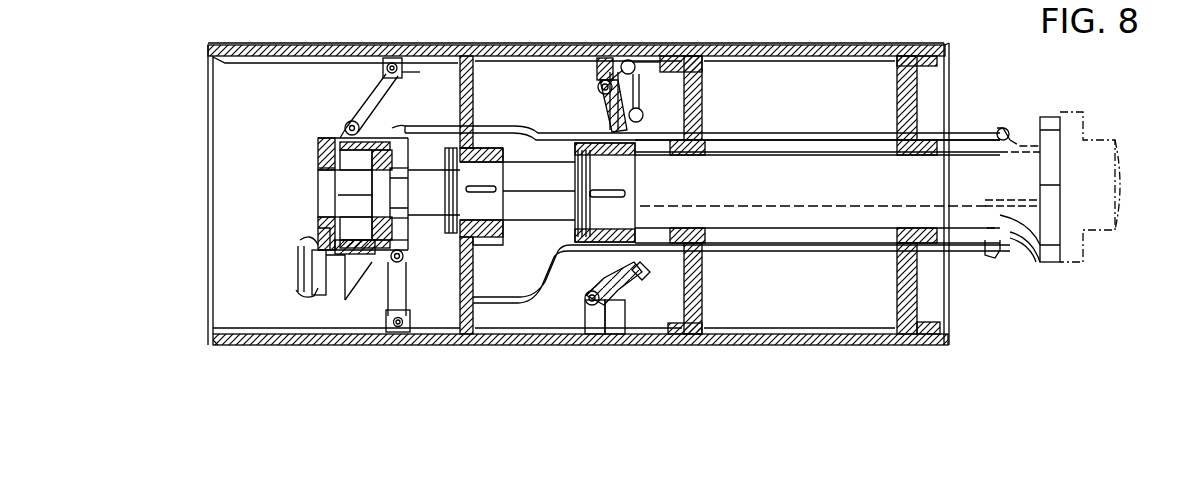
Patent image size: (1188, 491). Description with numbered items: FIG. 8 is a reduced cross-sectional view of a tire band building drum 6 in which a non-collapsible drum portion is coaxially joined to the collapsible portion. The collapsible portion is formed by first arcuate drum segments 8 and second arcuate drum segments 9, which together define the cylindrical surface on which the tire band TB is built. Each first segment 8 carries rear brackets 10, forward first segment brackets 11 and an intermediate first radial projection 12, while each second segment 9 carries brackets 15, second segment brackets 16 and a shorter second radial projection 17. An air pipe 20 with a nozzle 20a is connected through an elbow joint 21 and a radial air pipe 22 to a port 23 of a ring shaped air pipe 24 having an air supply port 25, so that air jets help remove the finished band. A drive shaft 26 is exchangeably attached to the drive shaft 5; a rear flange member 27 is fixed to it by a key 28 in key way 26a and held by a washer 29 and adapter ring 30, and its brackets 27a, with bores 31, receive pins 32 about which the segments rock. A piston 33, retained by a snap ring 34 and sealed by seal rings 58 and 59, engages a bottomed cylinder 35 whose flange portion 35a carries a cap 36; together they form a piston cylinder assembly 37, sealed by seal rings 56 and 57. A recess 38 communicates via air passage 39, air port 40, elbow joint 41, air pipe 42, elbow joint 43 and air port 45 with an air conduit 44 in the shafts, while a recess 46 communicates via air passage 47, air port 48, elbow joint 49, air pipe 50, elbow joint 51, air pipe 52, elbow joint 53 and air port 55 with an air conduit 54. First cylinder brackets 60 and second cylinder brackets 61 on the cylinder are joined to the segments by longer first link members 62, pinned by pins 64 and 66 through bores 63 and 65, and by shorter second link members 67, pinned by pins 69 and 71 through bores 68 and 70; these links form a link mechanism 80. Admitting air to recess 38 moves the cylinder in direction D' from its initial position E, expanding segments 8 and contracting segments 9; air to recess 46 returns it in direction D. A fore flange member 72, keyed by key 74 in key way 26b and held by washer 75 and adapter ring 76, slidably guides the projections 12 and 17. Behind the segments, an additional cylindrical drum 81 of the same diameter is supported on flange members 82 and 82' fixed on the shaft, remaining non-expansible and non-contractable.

The drive shaft 5 is at (1095, 142).
The tire band building drum 6 is at (504, 40).
The first arcuate drum segments 8 is at (258, 45).
The second arcuate drum segments 9 is at (292, 345).
The brackets 10 is at (598, 75).
The first segment brackets 11 is at (405, 78).
The first radial projection 12 is at (473, 82).
The brackets 15 is at (585, 318).
The second segment brackets 16 is at (440, 345).
The second radial projection 17 is at (474, 312).
The air pipe 20 is at (272, 63).
The nozzle 20a is at (206, 55).
The elbow joint 21 is at (660, 60).
The radial air pipe 22 is at (641, 92).
The port 23 is at (644, 114).
The ring shaped air pipe 24 is at (660, 152).
The air supply port 25 is at (641, 276).
The drive shaft 26 is at (958, 150).
The key way 26a is at (612, 190).
The key way 26b is at (491, 191).
The rear flange member 27 is at (631, 60).
The brackets 27a is at (608, 58).
The key 28 is at (625, 195).
The washer 29 is at (584, 133).
The adapter ring 30 is at (578, 148).
The bores 31 is at (598, 90).
The pins 32 is at (607, 97).
The piston 33 is at (355, 252).
The snap ring 34 is at (327, 272).
The cylinder 35 is at (350, 292).
The flange portion 35a is at (318, 138).
The cap 36 is at (318, 152).
The piston cylinder assembly 37 is at (296, 190).
The recess 38 is at (402, 240).
The air passage 39 is at (458, 158).
The air port 40 is at (432, 122).
The elbow joint 41 is at (400, 94).
The air pipe 42 is at (443, 125).
The elbow joint 43 is at (1003, 126).
The air conduit 44 is at (1050, 150).
The air port 45 is at (1018, 145).
The recess 46 is at (345, 193).
The air passage 47 is at (298, 254).
The air port 48 is at (318, 232).
The elbow joint 49 is at (300, 240).
The air pipe 50 is at (298, 270).
The elbow joint 51 is at (298, 295).
The air pipe 52 is at (360, 330).
The elbow joint 53 is at (990, 256).
The air conduit 54 is at (1015, 200).
The air port 55 is at (1006, 250).
The seal ring 56 is at (398, 212).
The seal ring 57 is at (318, 168).
The seal ring 58 is at (390, 172).
The seal ring 59 is at (364, 195).
The first cylinder brackets 60 is at (395, 118).
The second cylinder brackets 61 is at (405, 258).
The first link members 62 is at (372, 72).
The bore 63 is at (392, 62).
The pivotal pin 64 is at (400, 66).
The bore 65 is at (348, 124).
The pivotal pin 66 is at (364, 108).
The second link members 67 is at (410, 318).
The bore 68 is at (393, 332).
The pivotal pin 69 is at (402, 328).
The bore 70 is at (392, 262).
The pivotal pin 71 is at (455, 274).
The fore flange member 72 is at (495, 240).
The key 74 is at (503, 190).
The washer 75 is at (485, 166).
The adapter ring 76 is at (488, 140).
The link mechanism 80 is at (356, 83).
The additional cylindrical drum 81 is at (825, 50).
The flange member 82 is at (705, 195).
The flange member 82' is at (890, 195).
The top board TB is at (716, 45).
The arrow D is at (259, 176).
The arrow D' is at (256, 137).
The initial position E is at (324, 294).